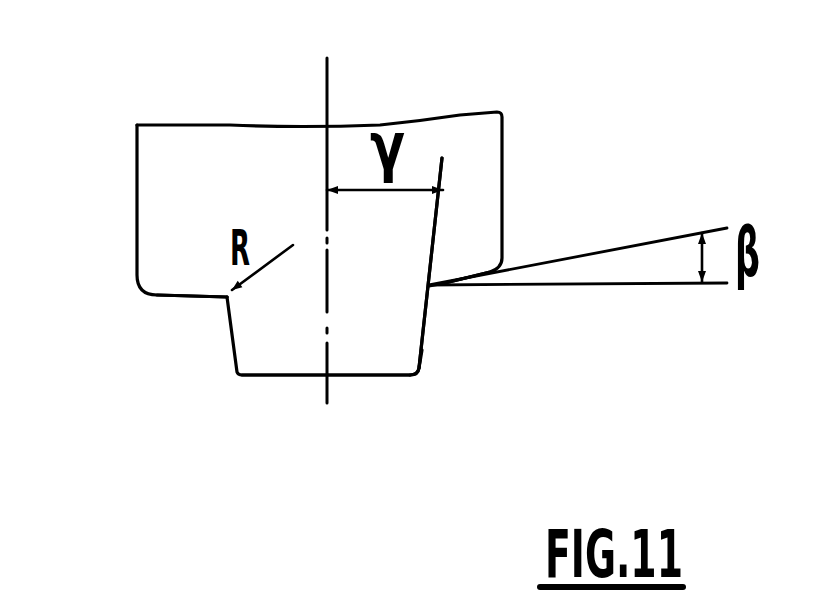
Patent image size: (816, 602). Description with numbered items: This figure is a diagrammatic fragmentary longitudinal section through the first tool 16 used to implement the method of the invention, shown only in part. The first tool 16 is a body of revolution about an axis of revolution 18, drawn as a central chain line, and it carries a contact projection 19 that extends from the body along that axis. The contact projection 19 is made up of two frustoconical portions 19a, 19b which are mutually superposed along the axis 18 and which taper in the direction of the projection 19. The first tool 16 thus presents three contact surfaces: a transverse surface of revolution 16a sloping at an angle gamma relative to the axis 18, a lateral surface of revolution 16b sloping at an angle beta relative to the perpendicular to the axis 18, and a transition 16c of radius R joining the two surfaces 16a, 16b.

The first tool 16 is at (217, 160).
The transverse surface of revolution 16a is at (422, 350).
The lateral surface of revolution 16b is at (182, 297).
The transition 16c is at (430, 287).
The axis of revolution 18 is at (327, 82).
The contact projection 19 is at (275, 345).
The frustoconical portion 19a is at (440, 283).
The frustoconical portion 19b is at (397, 340).